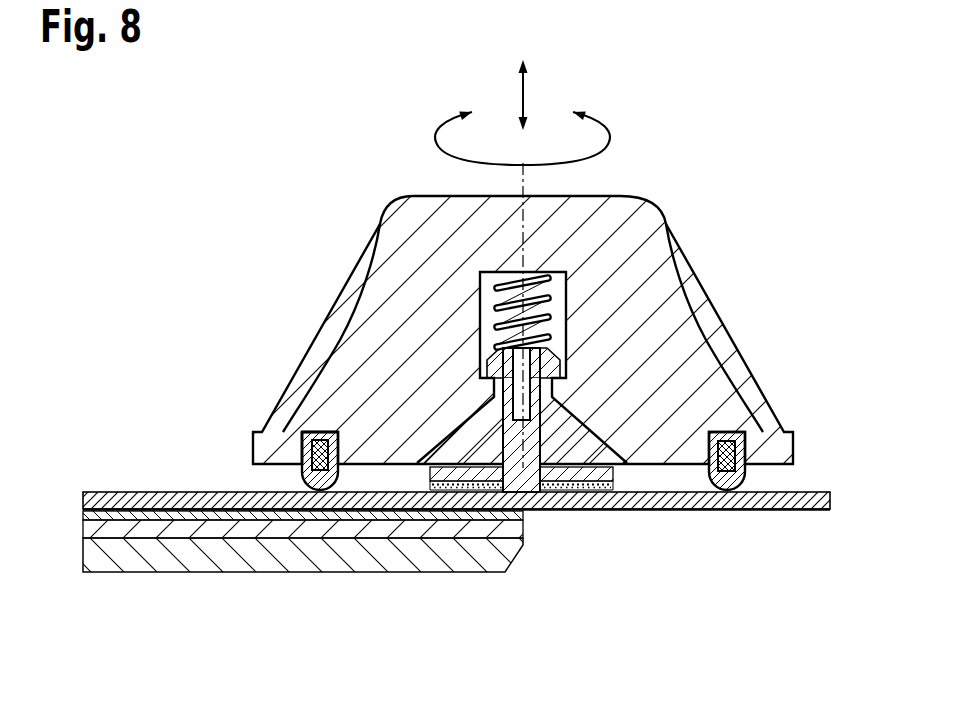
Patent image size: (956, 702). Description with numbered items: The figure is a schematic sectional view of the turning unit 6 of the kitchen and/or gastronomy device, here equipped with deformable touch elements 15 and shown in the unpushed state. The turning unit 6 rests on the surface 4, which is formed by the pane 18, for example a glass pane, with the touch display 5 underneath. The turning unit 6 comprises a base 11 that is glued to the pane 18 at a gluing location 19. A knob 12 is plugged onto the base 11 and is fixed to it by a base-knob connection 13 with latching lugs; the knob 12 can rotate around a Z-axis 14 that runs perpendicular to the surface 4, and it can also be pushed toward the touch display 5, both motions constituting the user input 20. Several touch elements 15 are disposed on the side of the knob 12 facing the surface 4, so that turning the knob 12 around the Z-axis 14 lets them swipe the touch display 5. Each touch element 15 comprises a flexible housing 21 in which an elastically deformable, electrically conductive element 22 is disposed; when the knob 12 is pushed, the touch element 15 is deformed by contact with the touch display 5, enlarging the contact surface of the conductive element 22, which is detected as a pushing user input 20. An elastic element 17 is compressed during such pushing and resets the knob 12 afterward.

The surface 4 is at (97, 491).
The touch display 5 is at (437, 555).
The turning unit 6 is at (688, 210).
The base 11 is at (541, 423).
The knob 12 is at (680, 237).
The base-knob connection 13 is at (563, 387).
The Z-axis 14 is at (520, 215).
The touch elements 15 is at (302, 473).
The elastic element 17 is at (548, 297).
The pane 18 is at (176, 501).
The gluing location 19 is at (600, 488).
The user input 20 is at (490, 98).
The flexible housing 21 is at (303, 453).
The electrically conductive element 22 is at (320, 433).